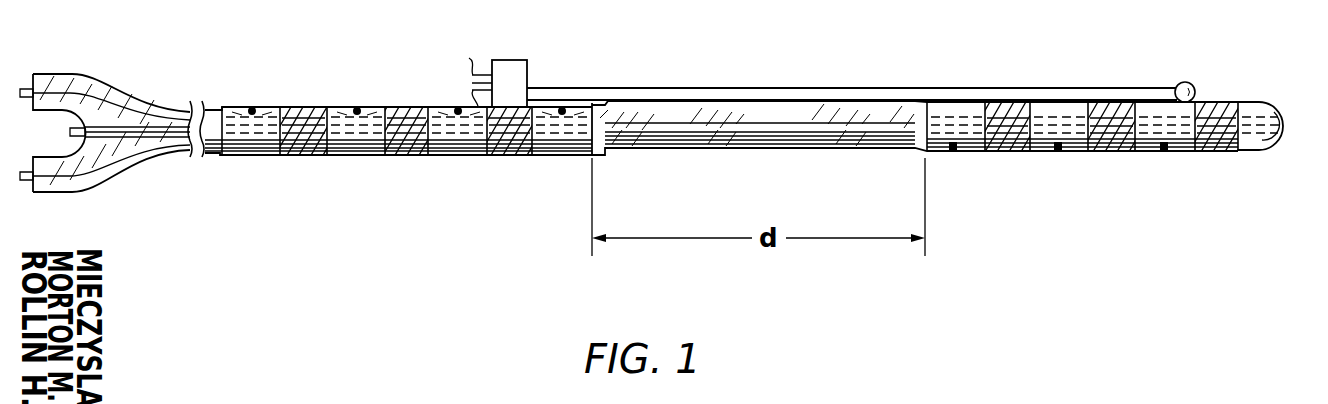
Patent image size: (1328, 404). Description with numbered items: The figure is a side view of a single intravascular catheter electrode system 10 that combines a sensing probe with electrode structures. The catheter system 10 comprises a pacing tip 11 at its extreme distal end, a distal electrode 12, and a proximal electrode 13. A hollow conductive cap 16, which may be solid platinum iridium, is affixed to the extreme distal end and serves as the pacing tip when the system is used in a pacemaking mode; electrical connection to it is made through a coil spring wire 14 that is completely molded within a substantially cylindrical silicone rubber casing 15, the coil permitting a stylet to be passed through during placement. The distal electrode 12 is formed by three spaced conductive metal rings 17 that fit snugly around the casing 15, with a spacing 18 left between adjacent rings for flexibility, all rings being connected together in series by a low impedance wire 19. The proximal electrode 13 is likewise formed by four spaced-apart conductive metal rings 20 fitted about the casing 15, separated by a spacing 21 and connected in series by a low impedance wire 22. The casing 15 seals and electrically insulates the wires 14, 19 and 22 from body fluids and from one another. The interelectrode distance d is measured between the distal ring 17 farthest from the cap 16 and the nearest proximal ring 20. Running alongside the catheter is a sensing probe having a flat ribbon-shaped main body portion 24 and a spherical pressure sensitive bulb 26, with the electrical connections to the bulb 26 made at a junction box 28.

The single intravascular catheter electrode system 10 is at (446, 292).
The pacing tip 11 is at (1293, 145).
The distal electrode 12 is at (1036, 170).
The proximal electrode 13 is at (353, 176).
The coil spring wire 14 is at (463, 130).
The casing 15 is at (754, 141).
The hollow conductive cap 16 is at (1268, 102).
The conductive metal rings 17 is at (964, 152).
The spacing 18 is at (1008, 152).
The low impedance wire 19 is at (860, 148).
The conductive metal rings 20 is at (357, 110).
The spacing 21 is at (318, 156).
The low impedance wire 22 is at (178, 118).
The main body portion 24 is at (803, 88).
The pressure sensitive bulb 26 is at (1190, 82).
The junction box 28 is at (512, 60).